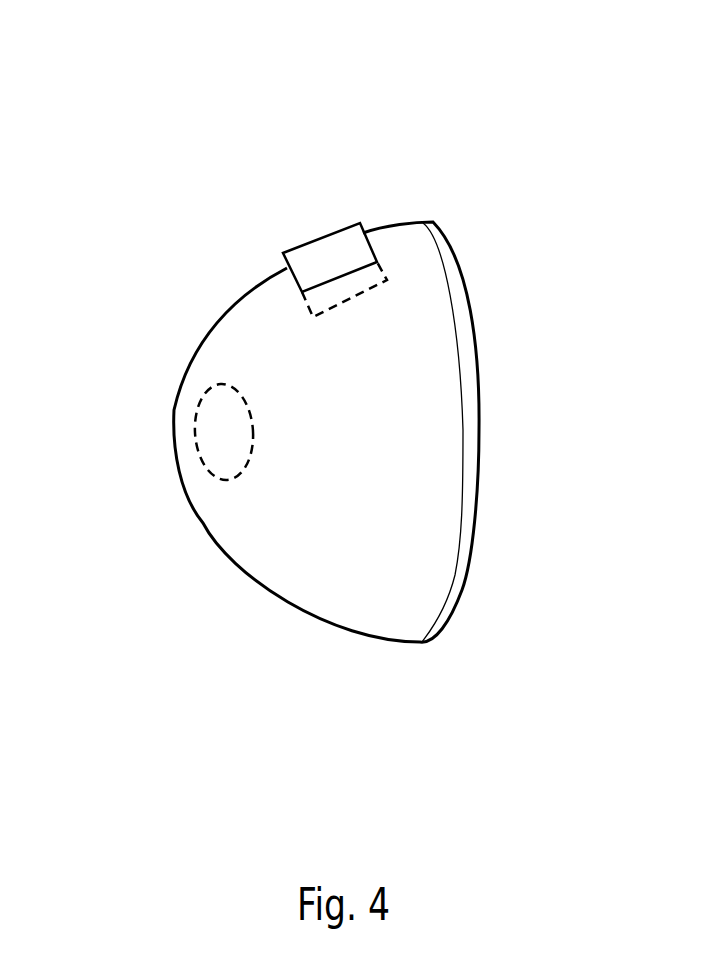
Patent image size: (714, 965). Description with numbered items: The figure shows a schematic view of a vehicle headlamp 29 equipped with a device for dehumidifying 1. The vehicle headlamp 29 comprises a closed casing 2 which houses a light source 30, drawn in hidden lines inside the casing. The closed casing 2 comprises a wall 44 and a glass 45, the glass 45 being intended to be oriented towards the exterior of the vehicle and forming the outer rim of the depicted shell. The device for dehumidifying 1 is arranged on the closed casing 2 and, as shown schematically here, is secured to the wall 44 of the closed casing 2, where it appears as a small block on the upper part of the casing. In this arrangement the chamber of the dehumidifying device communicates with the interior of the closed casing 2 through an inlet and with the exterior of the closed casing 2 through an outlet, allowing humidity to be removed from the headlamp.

The device for dehumidifying 1 is at (325, 210).
The closed casing 2 is at (281, 594).
The vehicle headlamp 29 is at (176, 318).
The light source 30 is at (220, 445).
The wall 44 is at (268, 330).
The glass 45 is at (468, 398).